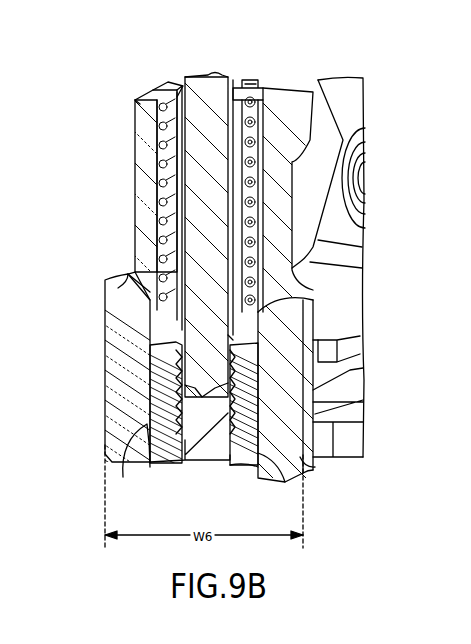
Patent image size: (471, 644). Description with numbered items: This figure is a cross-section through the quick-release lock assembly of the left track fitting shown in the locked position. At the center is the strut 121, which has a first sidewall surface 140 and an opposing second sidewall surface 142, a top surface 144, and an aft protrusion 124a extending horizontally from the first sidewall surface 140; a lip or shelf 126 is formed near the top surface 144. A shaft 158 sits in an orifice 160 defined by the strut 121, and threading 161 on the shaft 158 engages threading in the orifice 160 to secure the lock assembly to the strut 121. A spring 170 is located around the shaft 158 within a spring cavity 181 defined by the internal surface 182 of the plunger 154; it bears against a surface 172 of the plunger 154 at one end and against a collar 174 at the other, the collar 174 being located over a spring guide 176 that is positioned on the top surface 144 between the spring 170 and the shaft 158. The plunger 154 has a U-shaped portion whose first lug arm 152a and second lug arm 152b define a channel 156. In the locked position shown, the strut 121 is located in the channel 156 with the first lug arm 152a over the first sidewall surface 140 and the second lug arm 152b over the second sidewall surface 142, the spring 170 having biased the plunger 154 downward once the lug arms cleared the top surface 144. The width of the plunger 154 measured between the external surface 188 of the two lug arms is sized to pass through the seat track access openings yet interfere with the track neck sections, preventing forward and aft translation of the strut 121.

The strut 121 is at (165, 440).
The aft protrusion 124a is at (350, 443).
The shelf 126 is at (345, 346).
The first sidewall surface 140 is at (333, 372).
The second sidewall surface 142 is at (142, 432).
The top surface 144 is at (349, 288).
The first lug arm 152a is at (335, 405).
The second lug arm 152b is at (113, 375).
The plunger 154 is at (138, 157).
The channel 156 is at (125, 285).
The shaft 158 is at (197, 228).
The orifice 160 is at (188, 462).
The threading 161 is at (212, 390).
The spring 170 is at (160, 180).
The surface 172 is at (262, 301).
The collar 174 is at (258, 88).
The spring guide 176 is at (247, 180).
The spring cavity 181 is at (136, 121).
The internal surface 182 is at (174, 98).
The external surface 188 is at (312, 462).